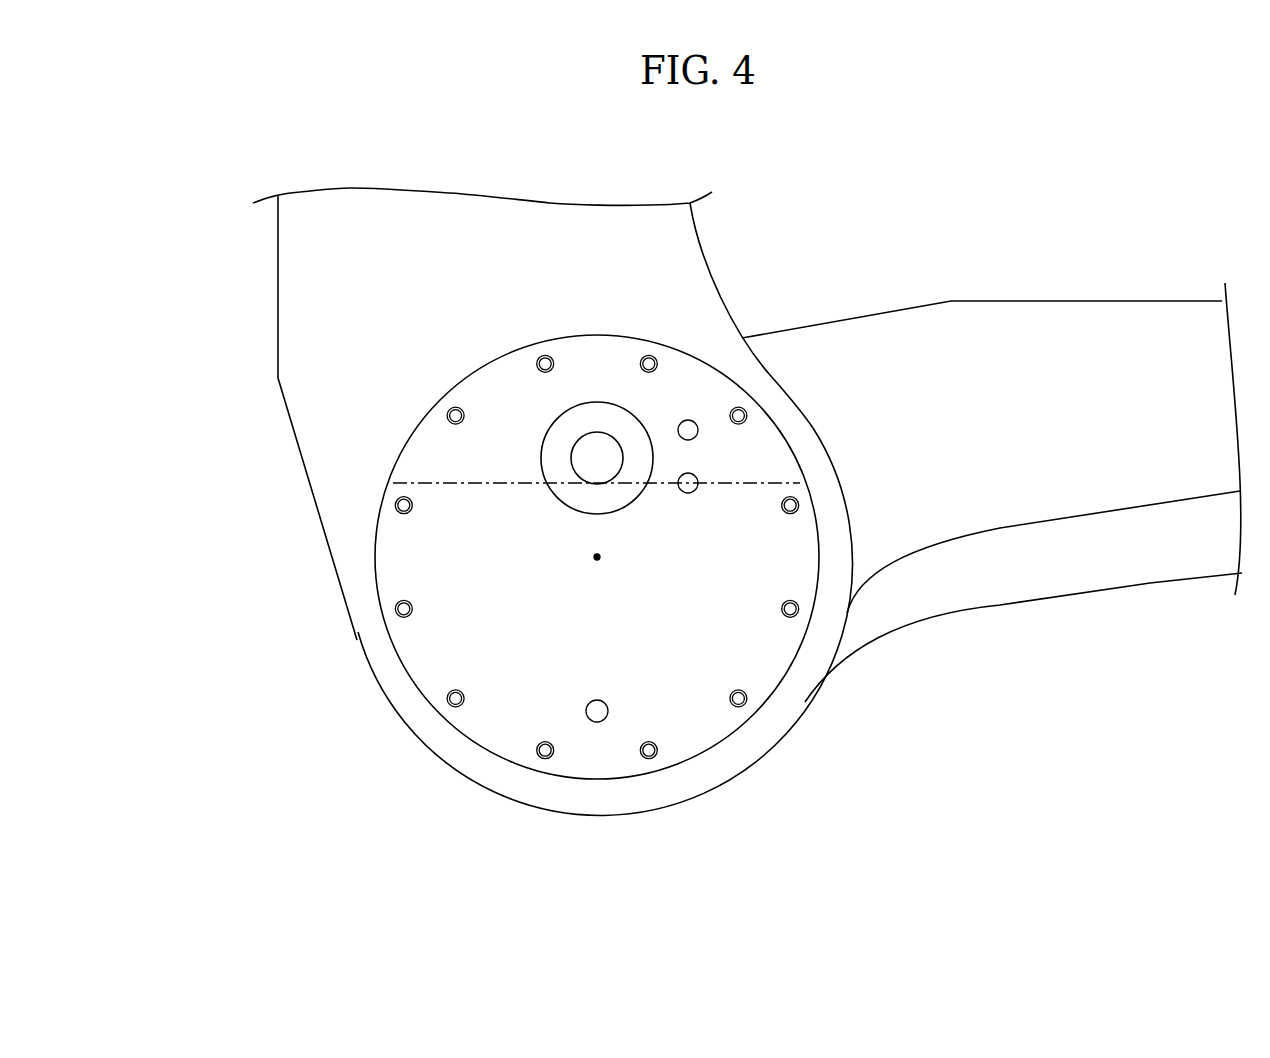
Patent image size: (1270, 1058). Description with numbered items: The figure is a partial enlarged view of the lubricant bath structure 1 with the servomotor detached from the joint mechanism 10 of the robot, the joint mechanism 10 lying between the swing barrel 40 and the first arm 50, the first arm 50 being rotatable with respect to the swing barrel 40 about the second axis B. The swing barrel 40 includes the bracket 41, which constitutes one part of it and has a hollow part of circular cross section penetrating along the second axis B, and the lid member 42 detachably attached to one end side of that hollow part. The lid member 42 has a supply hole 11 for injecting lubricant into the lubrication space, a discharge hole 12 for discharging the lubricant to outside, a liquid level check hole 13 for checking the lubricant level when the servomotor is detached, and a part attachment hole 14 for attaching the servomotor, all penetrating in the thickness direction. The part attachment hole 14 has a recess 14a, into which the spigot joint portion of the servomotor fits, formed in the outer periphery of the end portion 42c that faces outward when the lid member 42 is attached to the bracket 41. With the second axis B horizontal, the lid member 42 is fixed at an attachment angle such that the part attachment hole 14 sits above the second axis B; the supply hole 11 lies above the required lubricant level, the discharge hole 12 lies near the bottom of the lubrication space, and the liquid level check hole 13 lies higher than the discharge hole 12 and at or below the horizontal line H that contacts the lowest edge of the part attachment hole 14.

The lubricant bath structure 1 is at (565, 580).
The joint mechanism 10 is at (699, 428).
The supply hole 11 is at (695, 421).
The discharge hole 12 is at (592, 709).
The liquid level check hole 13 is at (697, 480).
The part attachment hole 14 is at (592, 447).
The recess 14a is at (553, 441).
The swing barrel 40 is at (246, 306).
The bracket 41 is at (300, 458).
The lid member 42 is at (447, 747).
The end portion 42c is at (407, 574).
The first arm 50 is at (983, 633).
The horizontal line H is at (488, 486).
The second axis B is at (597, 578).